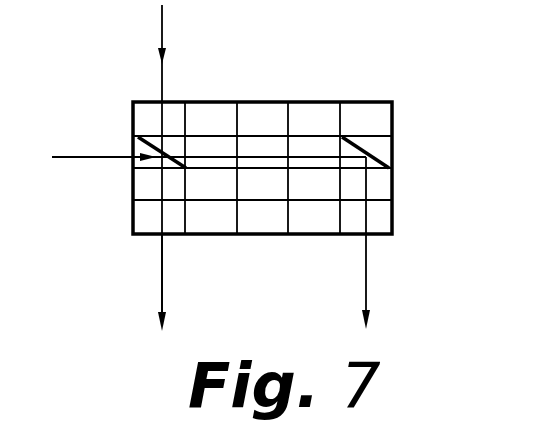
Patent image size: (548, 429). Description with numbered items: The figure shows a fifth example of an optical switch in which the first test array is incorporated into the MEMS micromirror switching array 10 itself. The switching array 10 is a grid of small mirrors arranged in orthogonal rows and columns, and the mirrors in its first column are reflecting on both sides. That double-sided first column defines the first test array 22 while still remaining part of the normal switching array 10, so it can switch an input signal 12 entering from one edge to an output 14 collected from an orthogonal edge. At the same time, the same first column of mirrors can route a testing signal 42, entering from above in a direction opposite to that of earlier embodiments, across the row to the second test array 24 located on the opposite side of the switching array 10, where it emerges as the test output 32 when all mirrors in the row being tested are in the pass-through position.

The micromirror switching array 10 is at (303, 235).
The input signal 12 is at (85, 157).
The signal output 14 is at (163, 282).
The first test array of micromirrors 22 is at (143, 236).
The second test array of micromirrors 24 is at (378, 236).
The test output 32 is at (367, 292).
The input test signal 42 is at (162, 37).